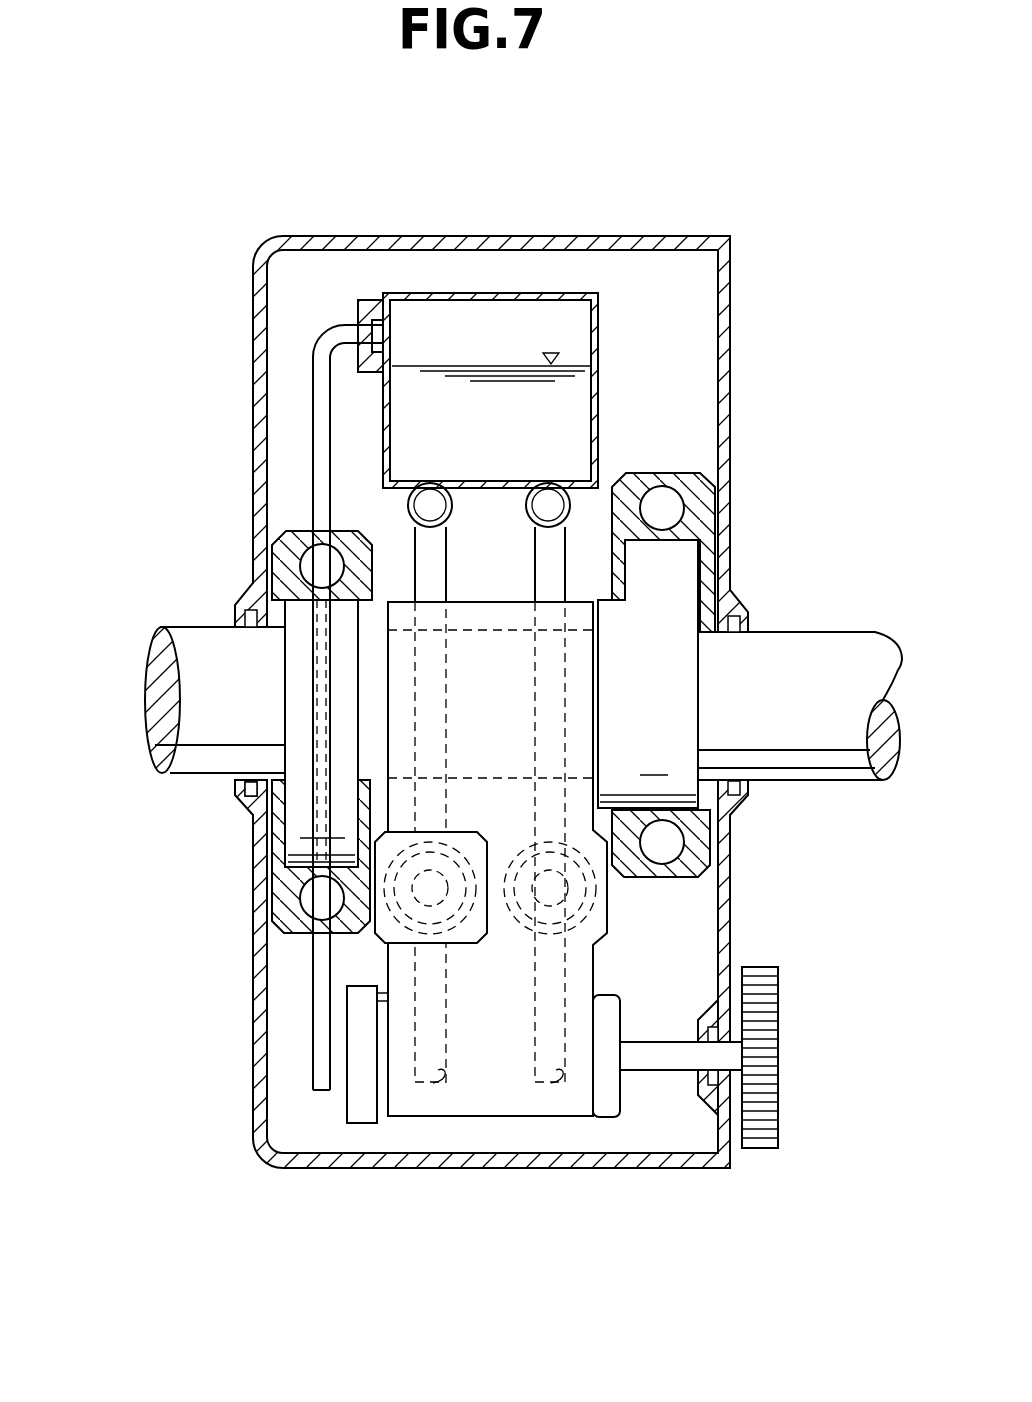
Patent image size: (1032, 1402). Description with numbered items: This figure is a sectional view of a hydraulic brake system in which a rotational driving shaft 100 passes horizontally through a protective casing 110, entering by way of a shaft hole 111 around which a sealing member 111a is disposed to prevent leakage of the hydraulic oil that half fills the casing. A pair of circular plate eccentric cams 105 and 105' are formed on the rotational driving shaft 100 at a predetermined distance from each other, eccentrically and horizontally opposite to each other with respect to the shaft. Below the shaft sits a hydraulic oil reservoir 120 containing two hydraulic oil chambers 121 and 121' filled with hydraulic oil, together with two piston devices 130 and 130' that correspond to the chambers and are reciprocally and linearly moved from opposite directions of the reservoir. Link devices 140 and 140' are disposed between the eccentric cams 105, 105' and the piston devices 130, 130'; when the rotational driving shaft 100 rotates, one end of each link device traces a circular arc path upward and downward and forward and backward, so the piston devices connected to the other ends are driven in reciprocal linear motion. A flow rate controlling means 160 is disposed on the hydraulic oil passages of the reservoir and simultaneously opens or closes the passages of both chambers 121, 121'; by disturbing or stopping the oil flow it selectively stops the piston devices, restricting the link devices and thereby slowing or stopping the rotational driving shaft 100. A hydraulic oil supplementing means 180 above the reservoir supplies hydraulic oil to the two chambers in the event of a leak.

The rotational driving shaft 100 is at (820, 648).
The protective casing 110 is at (615, 237).
The shaft hole 111 is at (242, 772).
The sealing member 111a is at (243, 793).
The link device 140' is at (241, 538).
The link device 140 is at (578, 703).
The eccentric cam 105' is at (219, 763).
The eccentric cam 105 is at (715, 637).
The hydraulic oil reservoir 120 is at (418, 1126).
The hydraulic oil chamber 121' is at (459, 937).
The hydraulic oil chamber 121 is at (567, 936).
The piston device 130' is at (293, 916).
The piston device 130 is at (690, 902).
The hydraulic oil supplementing means 180 is at (607, 398).
The flow rate controlling means 160 is at (603, 1107).